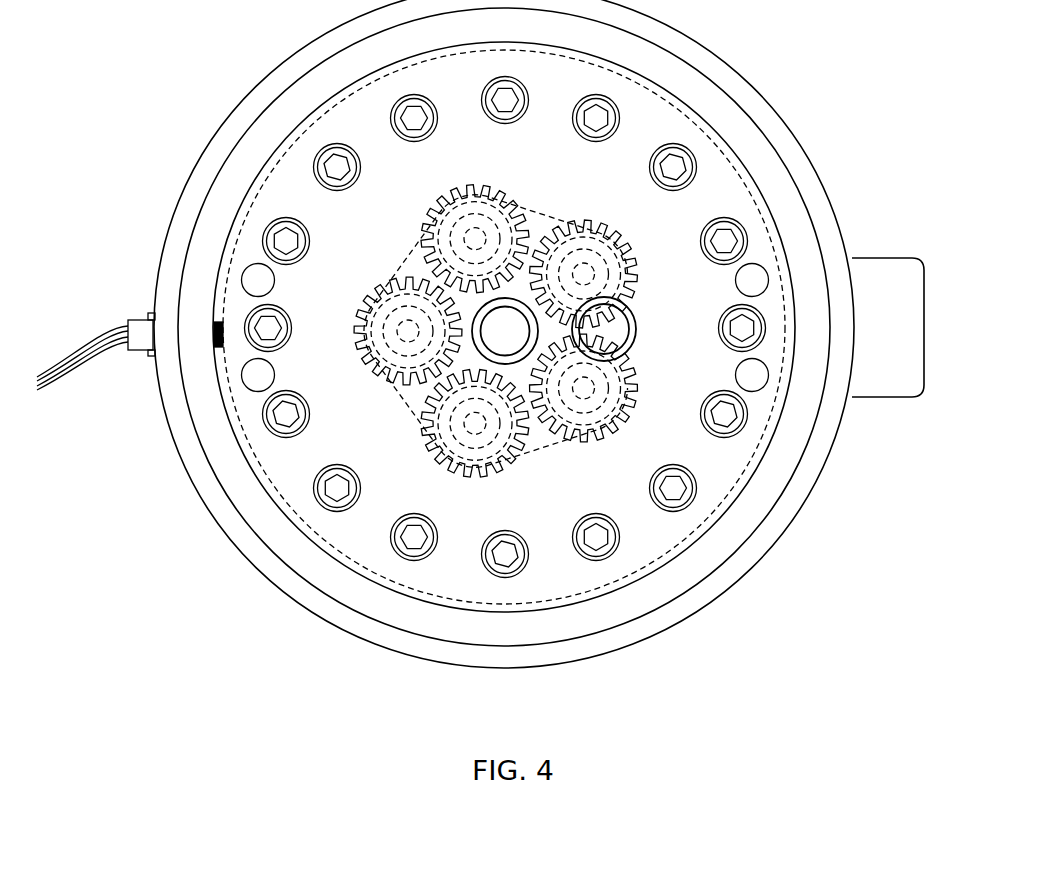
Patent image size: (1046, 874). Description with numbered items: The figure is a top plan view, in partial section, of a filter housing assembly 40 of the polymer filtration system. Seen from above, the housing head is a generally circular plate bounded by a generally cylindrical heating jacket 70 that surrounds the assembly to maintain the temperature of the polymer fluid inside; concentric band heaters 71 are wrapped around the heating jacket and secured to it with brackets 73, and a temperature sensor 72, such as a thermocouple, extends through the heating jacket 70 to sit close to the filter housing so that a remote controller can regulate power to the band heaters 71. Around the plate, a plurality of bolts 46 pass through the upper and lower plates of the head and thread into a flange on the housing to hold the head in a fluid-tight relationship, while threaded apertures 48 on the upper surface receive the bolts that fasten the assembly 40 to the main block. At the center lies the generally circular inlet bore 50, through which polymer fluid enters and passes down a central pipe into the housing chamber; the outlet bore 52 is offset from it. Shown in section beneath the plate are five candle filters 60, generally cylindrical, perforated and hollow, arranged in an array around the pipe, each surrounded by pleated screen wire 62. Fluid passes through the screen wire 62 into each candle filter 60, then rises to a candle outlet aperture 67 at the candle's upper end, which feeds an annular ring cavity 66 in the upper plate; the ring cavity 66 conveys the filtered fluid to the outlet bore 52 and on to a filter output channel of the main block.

The filter housing assembly 40 is at (772, 54).
The bolts 46 is at (283, 427).
The threaded apertures 48 is at (247, 387).
The inlet bore 50 is at (483, 347).
The outlet bore 52 is at (632, 338).
The candle filter 60 is at (437, 447).
The screen wire 62 is at (487, 472).
The ring cavity 66 is at (543, 430).
The candle outlet aperture 67 is at (470, 428).
The heating jacket 70 is at (290, 113).
The band heaters 71 is at (225, 137).
The temperature sensor 72 is at (144, 330).
The brackets 73 is at (881, 279).